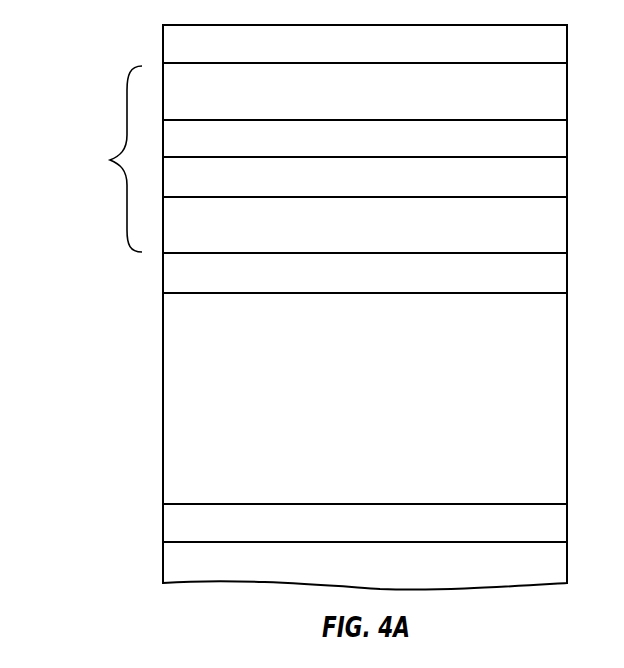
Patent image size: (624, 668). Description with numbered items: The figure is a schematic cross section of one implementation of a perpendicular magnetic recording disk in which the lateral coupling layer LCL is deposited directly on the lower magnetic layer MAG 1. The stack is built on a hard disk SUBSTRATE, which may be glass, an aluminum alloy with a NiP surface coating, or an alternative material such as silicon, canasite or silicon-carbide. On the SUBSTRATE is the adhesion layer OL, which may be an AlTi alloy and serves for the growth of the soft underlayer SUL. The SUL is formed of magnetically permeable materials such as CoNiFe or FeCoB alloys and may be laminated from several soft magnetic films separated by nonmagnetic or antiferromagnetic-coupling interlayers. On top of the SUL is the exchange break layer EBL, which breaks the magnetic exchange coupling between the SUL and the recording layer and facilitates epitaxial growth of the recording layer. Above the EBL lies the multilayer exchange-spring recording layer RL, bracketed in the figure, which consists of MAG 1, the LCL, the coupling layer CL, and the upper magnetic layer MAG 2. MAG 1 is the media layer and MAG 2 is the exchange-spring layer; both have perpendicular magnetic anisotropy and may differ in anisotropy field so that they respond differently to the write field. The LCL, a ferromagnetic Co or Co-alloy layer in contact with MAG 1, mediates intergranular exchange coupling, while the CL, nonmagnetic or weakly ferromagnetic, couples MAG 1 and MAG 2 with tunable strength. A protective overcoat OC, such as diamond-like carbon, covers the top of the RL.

The overcoat OC is at (365, 47).
The MAG2 layer MAG 2 is at (365, 100).
The coupling layer CL is at (365, 142).
The lateral coupling layer LCL is at (365, 181).
The MAG1 layer MAG 1 is at (365, 233).
The exchange break layer EBL is at (365, 277).
The soft underlayer SUL is at (365, 445).
The adhesion layer OL is at (365, 526).
The hard disk substrate SUBSTRATE is at (232, 566).
The recording layer RL is at (107, 159).